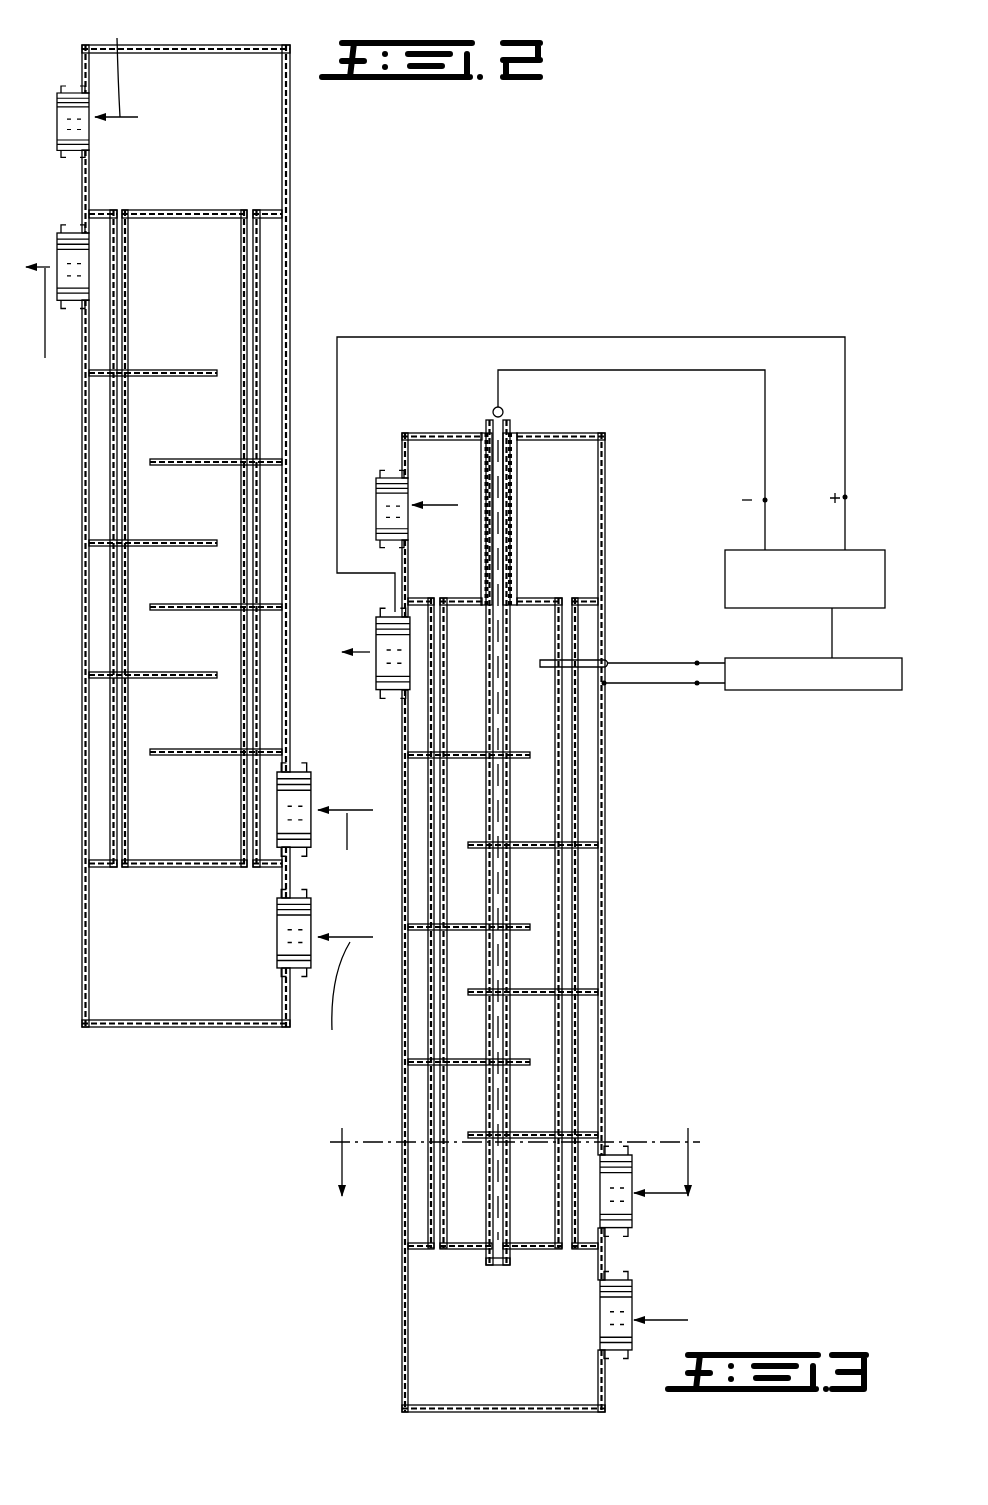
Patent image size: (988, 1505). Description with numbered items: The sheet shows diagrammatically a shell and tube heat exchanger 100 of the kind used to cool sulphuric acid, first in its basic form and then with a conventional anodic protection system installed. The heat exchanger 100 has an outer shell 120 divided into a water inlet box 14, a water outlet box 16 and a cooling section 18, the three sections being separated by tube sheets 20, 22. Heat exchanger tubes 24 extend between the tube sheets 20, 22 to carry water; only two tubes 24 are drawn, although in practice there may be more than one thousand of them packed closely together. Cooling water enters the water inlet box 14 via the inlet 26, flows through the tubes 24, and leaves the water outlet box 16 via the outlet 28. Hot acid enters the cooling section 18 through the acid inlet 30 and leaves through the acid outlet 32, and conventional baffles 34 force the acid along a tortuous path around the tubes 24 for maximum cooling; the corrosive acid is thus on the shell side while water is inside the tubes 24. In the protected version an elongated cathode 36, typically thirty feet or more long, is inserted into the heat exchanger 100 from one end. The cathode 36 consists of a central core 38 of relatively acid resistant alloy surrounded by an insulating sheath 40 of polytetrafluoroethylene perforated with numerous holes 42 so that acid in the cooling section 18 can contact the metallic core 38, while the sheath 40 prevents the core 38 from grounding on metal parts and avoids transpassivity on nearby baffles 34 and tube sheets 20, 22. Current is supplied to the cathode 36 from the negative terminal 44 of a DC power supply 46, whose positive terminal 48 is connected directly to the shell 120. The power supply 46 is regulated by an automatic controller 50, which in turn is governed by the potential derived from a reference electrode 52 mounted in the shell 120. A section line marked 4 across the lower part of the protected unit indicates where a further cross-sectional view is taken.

In FIG. 3, the section line 4- 4 is at (515, 1149).
In FIG. 2, the water inlet box 14 is at (190, 962).
In FIG. 3, the water inlet box 14 is at (475, 1337).
In FIG. 2, the water outlet box 16 is at (192, 137).
In FIG. 3, the water outlet box 16 is at (574, 472).
In FIG. 2, the cooling section 18 is at (185, 418).
In FIG. 3, the cooling section 18 is at (537, 887).
In FIG. 2, the tube sheet 20 is at (194, 869).
In FIG. 3, the tube sheet 20 is at (463, 1250).
In FIG. 2, the tube sheet 22 is at (220, 210).
In FIG. 3, the tube sheet 22 is at (496, 581).
In FIG. 2, the heat exchanger tubes 24 is at (240, 292).
In FIG. 3, the heat exchanger tubes 24 is at (430, 775).
In FIG. 2, the inlet 26 is at (302, 938).
In FIG. 3, the inlet 26 is at (628, 1312).
In FIG. 2, the outlet 28 is at (57, 110).
In FIG. 3, the outlet 28 is at (394, 502).
In FIG. 2, the acid inlet 30 is at (302, 803).
In FIG. 3, the acid inlet 30 is at (620, 1192).
In FIG. 2, the acid outlet 32 is at (60, 258).
In FIG. 3, the acid outlet 32 is at (390, 655).
In FIG. 2, the baffles 34 is at (177, 612).
In FIG. 3, the baffles 34 is at (525, 768).
In FIG. 3, the elongated cathode 36 is at (489, 422).
In FIG. 3, the central core 38 is at (499, 562).
In FIG. 3, the insulating sheath 40 is at (519, 457).
In FIG. 3, the holes 42 is at (486, 736).
In FIG. 3, the negative terminal 44 is at (765, 500).
In FIG. 3, the DC power supply 46 is at (725, 583).
In FIG. 3, the positive terminal 48 is at (845, 497).
In FIG. 3, the automatic controller 50 is at (806, 658).
In FIG. 3, the reference electrode 52 is at (592, 661).
In FIG. 2, the heat exchanger 100 is at (300, 332).
In FIG. 3, the heat exchanger 100 is at (618, 542).
In FIG. 2, the outer shell 120 is at (80, 512).
In FIG. 3, the outer shell 120 is at (604, 822).